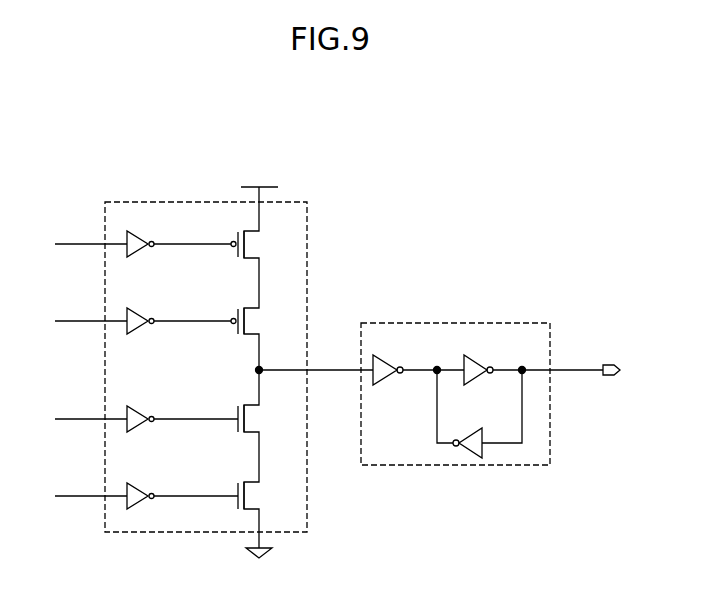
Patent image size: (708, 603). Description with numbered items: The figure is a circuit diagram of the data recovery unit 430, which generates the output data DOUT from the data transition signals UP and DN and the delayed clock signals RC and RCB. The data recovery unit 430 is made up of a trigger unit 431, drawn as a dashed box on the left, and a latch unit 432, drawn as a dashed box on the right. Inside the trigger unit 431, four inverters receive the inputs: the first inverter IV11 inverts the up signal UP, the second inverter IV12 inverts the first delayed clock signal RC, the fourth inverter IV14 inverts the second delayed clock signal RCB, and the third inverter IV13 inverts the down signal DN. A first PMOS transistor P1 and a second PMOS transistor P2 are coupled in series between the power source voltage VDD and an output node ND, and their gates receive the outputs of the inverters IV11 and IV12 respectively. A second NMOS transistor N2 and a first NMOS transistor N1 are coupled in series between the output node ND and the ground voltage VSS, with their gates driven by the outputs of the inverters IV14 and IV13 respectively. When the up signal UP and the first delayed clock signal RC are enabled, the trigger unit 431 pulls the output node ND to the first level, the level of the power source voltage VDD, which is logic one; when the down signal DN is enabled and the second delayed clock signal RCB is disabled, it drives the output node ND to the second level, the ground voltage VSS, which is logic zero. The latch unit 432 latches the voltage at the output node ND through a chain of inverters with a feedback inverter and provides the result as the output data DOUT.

The data recovery unit 430 is at (127, 148).
The trigger unit 431 is at (307, 215).
The latch unit 432 is at (445, 323).
The first inverter IV11 is at (150, 241).
The second inverter IV12 is at (150, 318).
The third inverter IV13 is at (150, 493).
The fourth inverter IV14 is at (150, 416).
The first PMOS transistor P1 is at (256, 244).
The second PMOS transistor P2 is at (256, 321).
The first NMOS transistor N1 is at (260, 495).
The second NMOS transistor N2 is at (260, 418).
The output node ND is at (261, 368).
The up signal UP is at (74, 245).
The first delayed clock signal RC is at (72, 322).
The second delayed clock signal RCB is at (69, 420).
The down signal DN is at (72, 497).
The power source voltage VDD is at (260, 175).
The ground voltage VSS is at (259, 567).
The output data DOUT is at (643, 371).